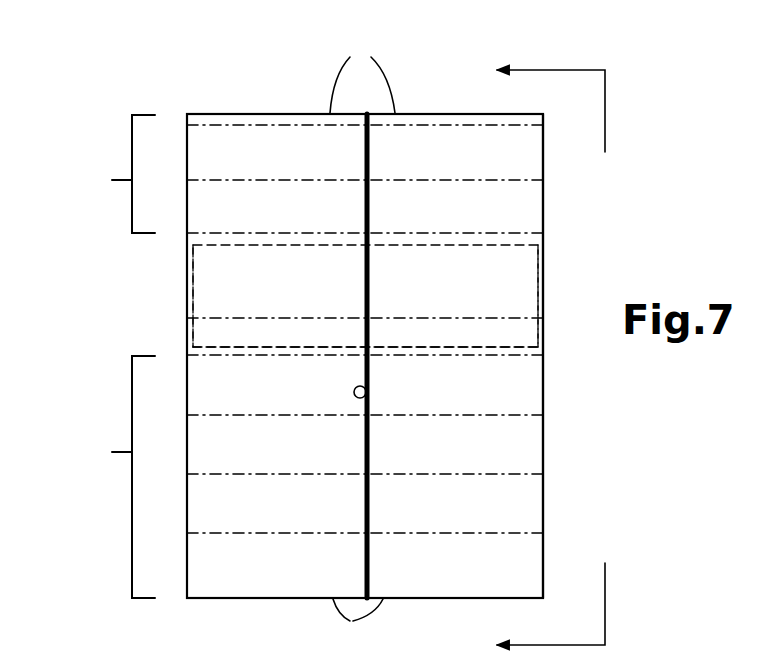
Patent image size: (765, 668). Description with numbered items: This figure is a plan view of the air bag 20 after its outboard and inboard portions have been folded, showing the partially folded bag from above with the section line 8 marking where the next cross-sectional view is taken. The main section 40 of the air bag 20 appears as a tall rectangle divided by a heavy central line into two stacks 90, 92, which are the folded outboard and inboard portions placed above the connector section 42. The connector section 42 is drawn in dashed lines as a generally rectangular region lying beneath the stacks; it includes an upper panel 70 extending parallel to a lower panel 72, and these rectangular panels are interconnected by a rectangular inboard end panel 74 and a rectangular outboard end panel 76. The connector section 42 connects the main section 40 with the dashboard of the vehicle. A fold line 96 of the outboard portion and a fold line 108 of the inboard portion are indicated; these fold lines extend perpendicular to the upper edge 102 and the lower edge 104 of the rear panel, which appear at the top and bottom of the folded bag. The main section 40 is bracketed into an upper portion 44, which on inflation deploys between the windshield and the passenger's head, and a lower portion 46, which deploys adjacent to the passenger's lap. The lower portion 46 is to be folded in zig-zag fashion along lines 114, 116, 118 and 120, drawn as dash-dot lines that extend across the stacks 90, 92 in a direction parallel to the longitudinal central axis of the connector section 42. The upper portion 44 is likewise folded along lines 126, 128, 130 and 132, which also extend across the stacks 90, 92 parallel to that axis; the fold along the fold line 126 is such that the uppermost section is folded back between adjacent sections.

The section line 8- 8 is at (539, 358).
The air bag 20 is at (138, 72).
The main section 40 is at (546, 232).
The connector section 42 is at (191, 297).
The upper portion 44 is at (117, 174).
The lower portion 46 is at (117, 477).
The upper panel 70 is at (347, 247).
The lower panel 72 is at (498, 346).
The inboard end panel 74 is at (194, 282).
The outboard end panel 76 is at (542, 280).
The stack 90 is at (420, 112).
The stack 92 is at (250, 112).
The fold line 96 is at (543, 508).
The upper edge 102 is at (362, 73).
The lower edge 104 is at (356, 624).
The fold line 108 is at (370, 395).
The fold line 114 is at (232, 535).
The fold line 116 is at (237, 476).
The fold line 118 is at (237, 417).
The fold line 120 is at (229, 357).
The fold line 126 is at (486, 124).
The fold line 128 is at (430, 179).
The fold line 130 is at (425, 232).
The fold line 132 is at (410, 318).